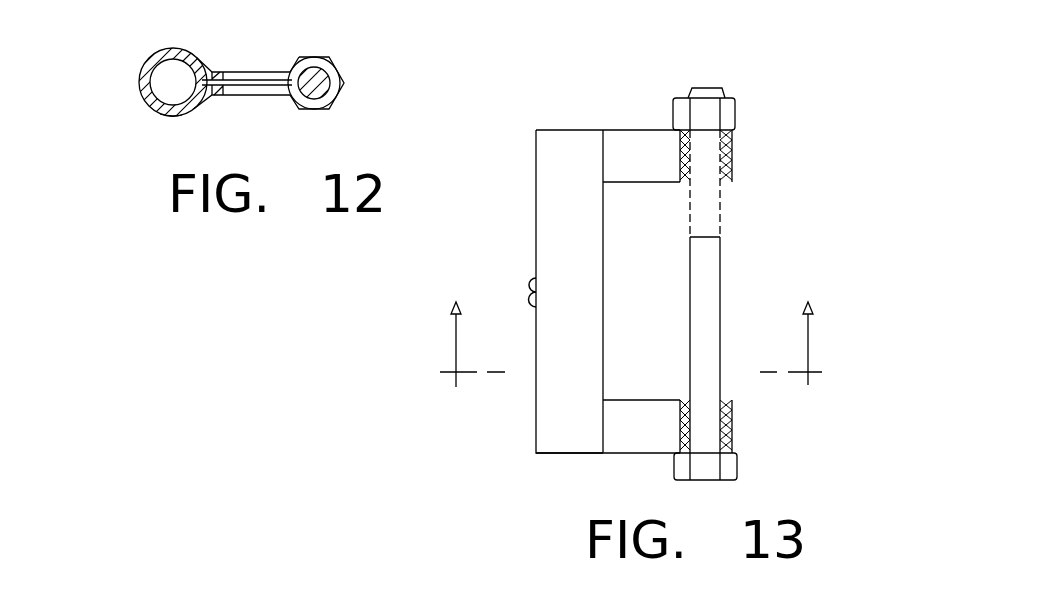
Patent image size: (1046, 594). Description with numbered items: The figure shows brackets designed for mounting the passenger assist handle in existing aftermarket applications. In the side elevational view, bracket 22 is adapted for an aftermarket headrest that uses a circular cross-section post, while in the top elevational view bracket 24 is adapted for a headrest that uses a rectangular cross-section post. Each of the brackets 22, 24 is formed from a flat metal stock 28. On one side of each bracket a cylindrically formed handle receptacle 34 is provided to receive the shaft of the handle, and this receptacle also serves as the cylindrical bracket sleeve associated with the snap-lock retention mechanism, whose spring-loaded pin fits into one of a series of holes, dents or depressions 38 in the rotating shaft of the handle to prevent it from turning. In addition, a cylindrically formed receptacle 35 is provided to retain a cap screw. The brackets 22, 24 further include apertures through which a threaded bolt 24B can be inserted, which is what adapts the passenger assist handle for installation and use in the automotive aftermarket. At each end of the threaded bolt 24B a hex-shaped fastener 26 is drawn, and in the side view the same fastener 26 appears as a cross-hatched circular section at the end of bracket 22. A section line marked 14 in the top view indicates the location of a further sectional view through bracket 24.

In FIG. 12, the bracket 22 is at (265, 73).
In FIG. 13, the bracket 24 is at (642, 148).
In FIG. 13, the threaded bolt 24B is at (712, 307).
In FIG. 12, the nut 26 is at (327, 60).
In FIG. 13, the nut 26 is at (732, 120).
In FIG. 12, the flat metal stock 28 is at (157, 65).
In FIG. 12, the handle receptacle 34 is at (172, 107).
In FIG. 13, the handle receptacle 34 is at (572, 453).
In FIG. 13, the receptacle 35 is at (730, 162).
In FIG. 13, the depression 38 is at (528, 285).
In FIG. 13, the section line 14- 14 is at (630, 355).